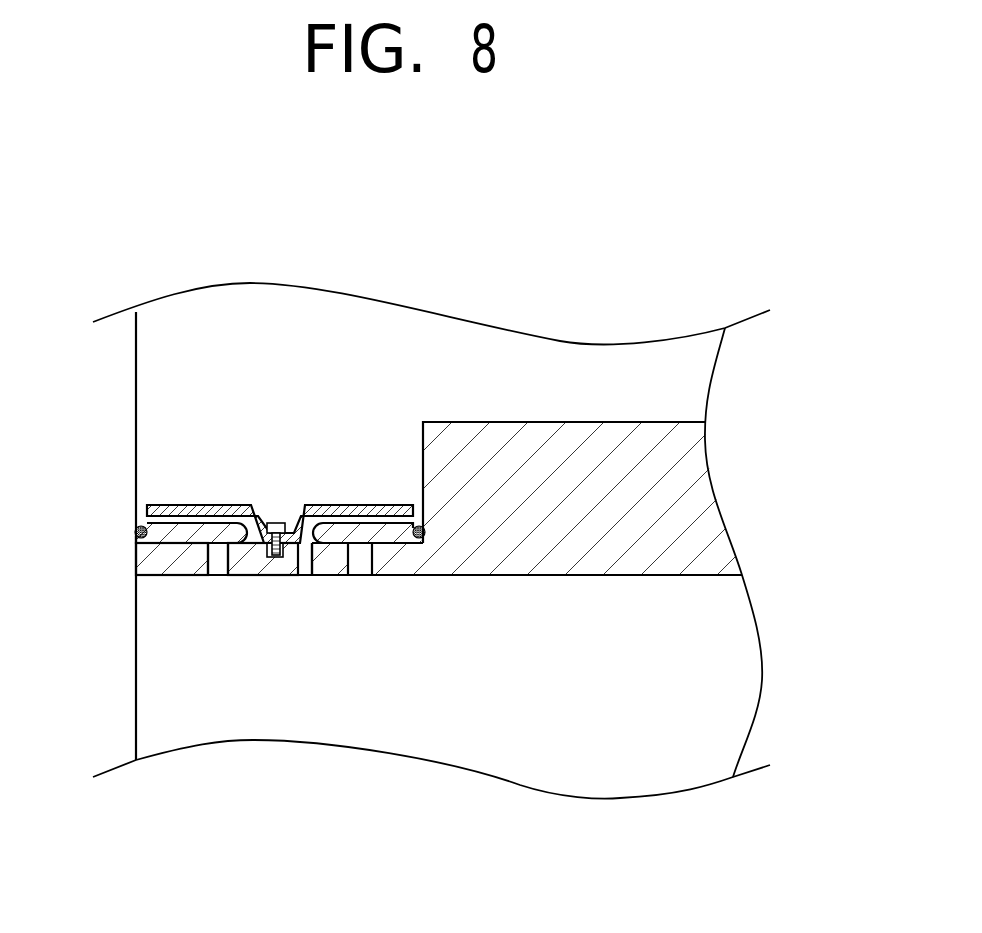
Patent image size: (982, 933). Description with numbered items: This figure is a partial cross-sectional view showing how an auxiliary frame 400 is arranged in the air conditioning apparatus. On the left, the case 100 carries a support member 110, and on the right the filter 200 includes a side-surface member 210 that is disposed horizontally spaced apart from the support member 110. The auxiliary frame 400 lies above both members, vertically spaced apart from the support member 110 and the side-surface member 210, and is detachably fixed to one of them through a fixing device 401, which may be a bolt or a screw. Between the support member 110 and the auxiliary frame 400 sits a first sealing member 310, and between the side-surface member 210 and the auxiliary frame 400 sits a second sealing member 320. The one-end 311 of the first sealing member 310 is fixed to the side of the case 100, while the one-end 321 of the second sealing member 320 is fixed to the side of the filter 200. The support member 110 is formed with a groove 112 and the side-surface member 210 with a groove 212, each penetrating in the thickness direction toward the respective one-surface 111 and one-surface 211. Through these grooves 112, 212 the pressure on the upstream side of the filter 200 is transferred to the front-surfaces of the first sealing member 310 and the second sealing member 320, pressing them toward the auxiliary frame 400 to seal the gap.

The case 100 is at (130, 363).
The support member 110 is at (177, 578).
The one-surface of the support member 111 is at (275, 587).
The groove of the support member 112 is at (222, 587).
The filter 200 is at (594, 437).
The side-surface member 210 is at (407, 578).
The one-surface of the side-surface member 211 is at (323, 587).
The groove of the side-surface member 212 is at (361, 587).
The first sealing member 310 is at (163, 538).
The one-end of the first sealing member 311 is at (128, 546).
The second sealing member 320 is at (375, 517).
The one-end of the second sealing member 321 is at (423, 526).
The auxiliary frame 400 is at (203, 504).
The fixing device 401 is at (285, 511).